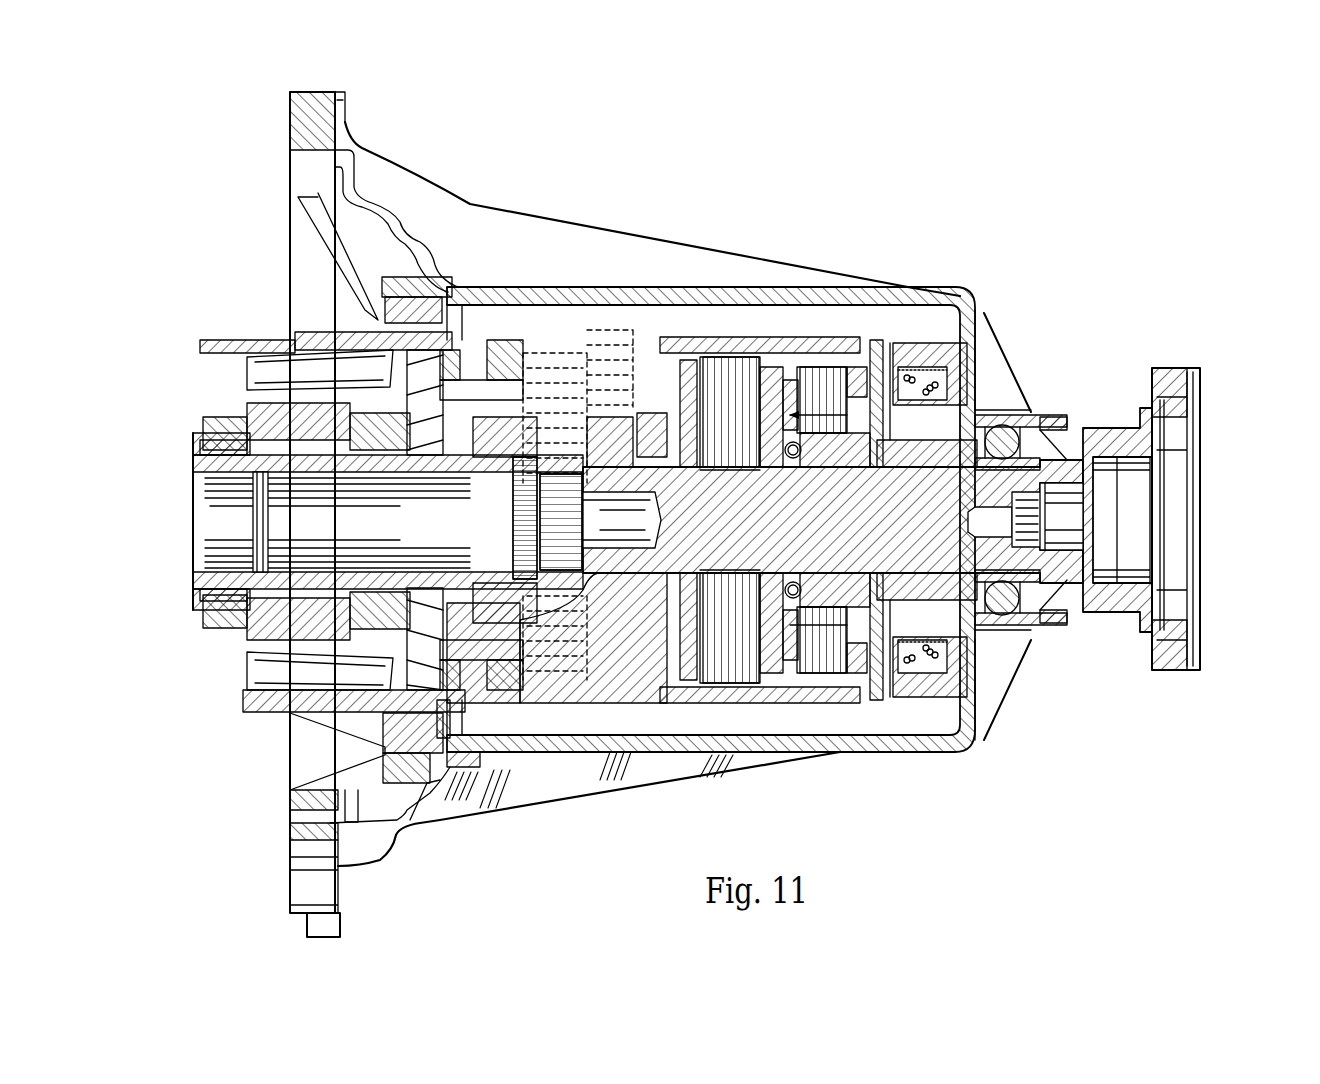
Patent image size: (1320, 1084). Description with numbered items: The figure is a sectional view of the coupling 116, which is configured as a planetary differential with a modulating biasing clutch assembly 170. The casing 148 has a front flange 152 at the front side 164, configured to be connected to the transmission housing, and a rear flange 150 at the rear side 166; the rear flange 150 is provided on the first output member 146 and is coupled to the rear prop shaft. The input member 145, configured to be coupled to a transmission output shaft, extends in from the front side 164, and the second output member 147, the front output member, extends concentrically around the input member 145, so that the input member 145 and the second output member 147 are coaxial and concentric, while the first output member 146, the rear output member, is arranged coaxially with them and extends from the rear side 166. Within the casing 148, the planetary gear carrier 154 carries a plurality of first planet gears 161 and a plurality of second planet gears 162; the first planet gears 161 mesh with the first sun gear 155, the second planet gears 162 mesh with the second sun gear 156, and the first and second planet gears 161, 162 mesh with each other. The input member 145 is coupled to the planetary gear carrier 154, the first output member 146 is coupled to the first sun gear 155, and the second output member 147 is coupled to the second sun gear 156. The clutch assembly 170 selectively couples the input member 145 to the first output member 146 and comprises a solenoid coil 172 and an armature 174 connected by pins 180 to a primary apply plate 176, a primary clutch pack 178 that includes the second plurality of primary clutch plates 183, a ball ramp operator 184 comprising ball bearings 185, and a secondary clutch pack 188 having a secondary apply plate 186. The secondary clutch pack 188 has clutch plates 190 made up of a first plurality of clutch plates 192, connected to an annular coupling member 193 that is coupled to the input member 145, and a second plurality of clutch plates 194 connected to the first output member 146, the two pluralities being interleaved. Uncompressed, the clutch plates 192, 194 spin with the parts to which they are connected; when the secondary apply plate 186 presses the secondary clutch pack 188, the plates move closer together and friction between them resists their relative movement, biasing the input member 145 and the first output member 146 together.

The coupling 116 is at (1035, 212).
The input member 145 is at (215, 524).
The first output member 146 is at (1205, 640).
The second output member 147 is at (295, 405).
The casing 148 is at (598, 222).
The rear flange 150 is at (1167, 380).
The front flange 152 is at (305, 125).
The planetary gear carrier 154 is at (425, 345).
The first sun gear 155 is at (642, 580).
The second sun gear 156 is at (545, 600).
The first planet gears 161 is at (530, 340).
The second planet gears 162 is at (478, 400).
The front side 164 is at (168, 318).
The rear side 166 is at (1232, 440).
The modulating biasing clutch assembly 170 is at (860, 292).
The solenoid coil 172 is at (960, 345).
The armature 174 is at (905, 345).
The primary apply plate 176 is at (805, 360).
The primary clutch pack 178 is at (853, 292).
The pins 180 is at (915, 375).
The second plurality of primary clutch plates 183 is at (905, 462).
The ball ramp operator 184 is at (738, 300).
The ball bearings 185 is at (800, 460).
The secondary apply plate 186 is at (745, 340).
The secondary clutch pack 188 is at (762, 370).
The clutch plates 190 is at (720, 470).
The first plurality of clutch plates 192 is at (668, 360).
The annular coupling member 193 is at (665, 345).
The second plurality of clutch plates 194 is at (710, 463).